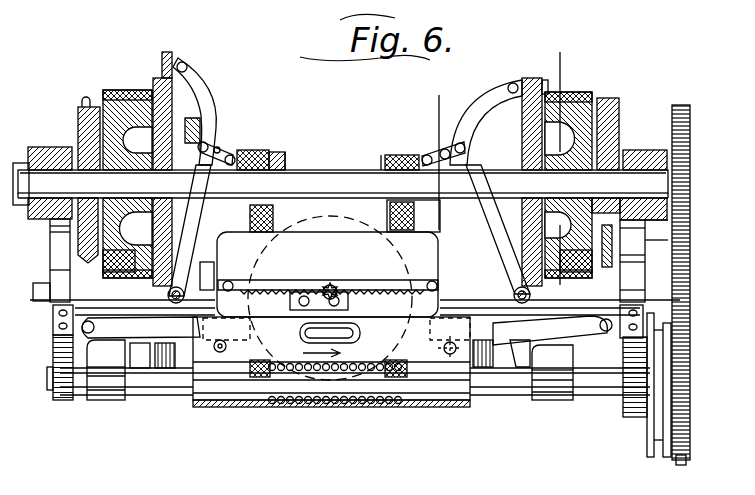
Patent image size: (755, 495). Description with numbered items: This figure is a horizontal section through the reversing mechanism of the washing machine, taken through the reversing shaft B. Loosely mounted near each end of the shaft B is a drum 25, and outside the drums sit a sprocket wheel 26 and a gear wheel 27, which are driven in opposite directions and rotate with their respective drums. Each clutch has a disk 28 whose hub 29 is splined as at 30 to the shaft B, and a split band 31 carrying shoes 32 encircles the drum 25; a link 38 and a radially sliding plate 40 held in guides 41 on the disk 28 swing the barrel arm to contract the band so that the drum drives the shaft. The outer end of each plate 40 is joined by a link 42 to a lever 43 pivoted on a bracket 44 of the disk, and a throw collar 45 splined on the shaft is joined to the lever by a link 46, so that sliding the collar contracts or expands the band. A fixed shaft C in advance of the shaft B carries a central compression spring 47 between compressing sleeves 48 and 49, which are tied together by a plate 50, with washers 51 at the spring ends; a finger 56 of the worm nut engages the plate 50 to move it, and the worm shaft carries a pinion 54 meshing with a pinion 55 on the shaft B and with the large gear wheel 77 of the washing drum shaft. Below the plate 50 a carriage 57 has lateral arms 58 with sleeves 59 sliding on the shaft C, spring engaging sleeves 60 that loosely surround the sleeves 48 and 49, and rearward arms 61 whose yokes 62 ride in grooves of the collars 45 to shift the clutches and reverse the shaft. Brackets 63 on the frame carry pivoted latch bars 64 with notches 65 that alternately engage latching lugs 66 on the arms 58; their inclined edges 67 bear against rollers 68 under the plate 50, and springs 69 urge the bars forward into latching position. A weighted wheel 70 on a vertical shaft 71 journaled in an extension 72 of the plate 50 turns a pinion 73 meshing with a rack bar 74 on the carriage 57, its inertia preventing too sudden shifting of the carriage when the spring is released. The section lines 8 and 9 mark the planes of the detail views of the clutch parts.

The frame 8 is at (445, 186).
The shaft 9 is at (558, 164).
The drum 25 is at (90, 107).
The sprocket wheel 26 is at (58, 147).
The gear wheel 27 is at (640, 150).
The disk 28 is at (167, 52).
The hub 29 is at (211, 108).
The spline 30 is at (200, 130).
The split band 31 is at (580, 100).
The shoes 32 is at (125, 90).
The link 38 is at (340, 184).
The plate 40 is at (173, 58).
The guides 41 is at (222, 150).
The link 42 is at (232, 152).
The lever 43 is at (349, 234).
The bracket 44 is at (349, 277).
The throw collar 45 is at (278, 152).
The link 46 is at (247, 150).
The compression spring 47 is at (366, 404).
The compressing sleeve 48 is at (254, 407).
The compressing sleeve 49 is at (512, 370).
The plate 50 is at (437, 348).
The washers 51 is at (276, 404).
The pinion 54 is at (684, 346).
The pinion 55 is at (690, 186).
The finger 56 is at (322, 354).
The carriage 57 is at (328, 265).
The arms 58 is at (330, 370).
The sleeves 59 is at (110, 380).
The spring engaging sleeves 60 is at (262, 410).
The arms 61 is at (331, 216).
The yokes 62 is at (285, 152).
The brackets 63 is at (53, 330).
The latch bars 64 is at (355, 322).
The notches 65 is at (176, 372).
The latching lugs 66 is at (146, 372).
The inclined edges 67 is at (230, 350).
The rollers 68 is at (186, 438).
The springs 69 is at (106, 316).
The wheel 70 is at (370, 232).
The vertical shaft 71 is at (332, 284).
The extension 72 is at (290, 300).
The pinion 73 is at (340, 286).
The rack bar 74 is at (276, 282).
The gear wheel 77 is at (684, 465).
The shaft B is at (333, 158).
The shaft C is at (135, 435).